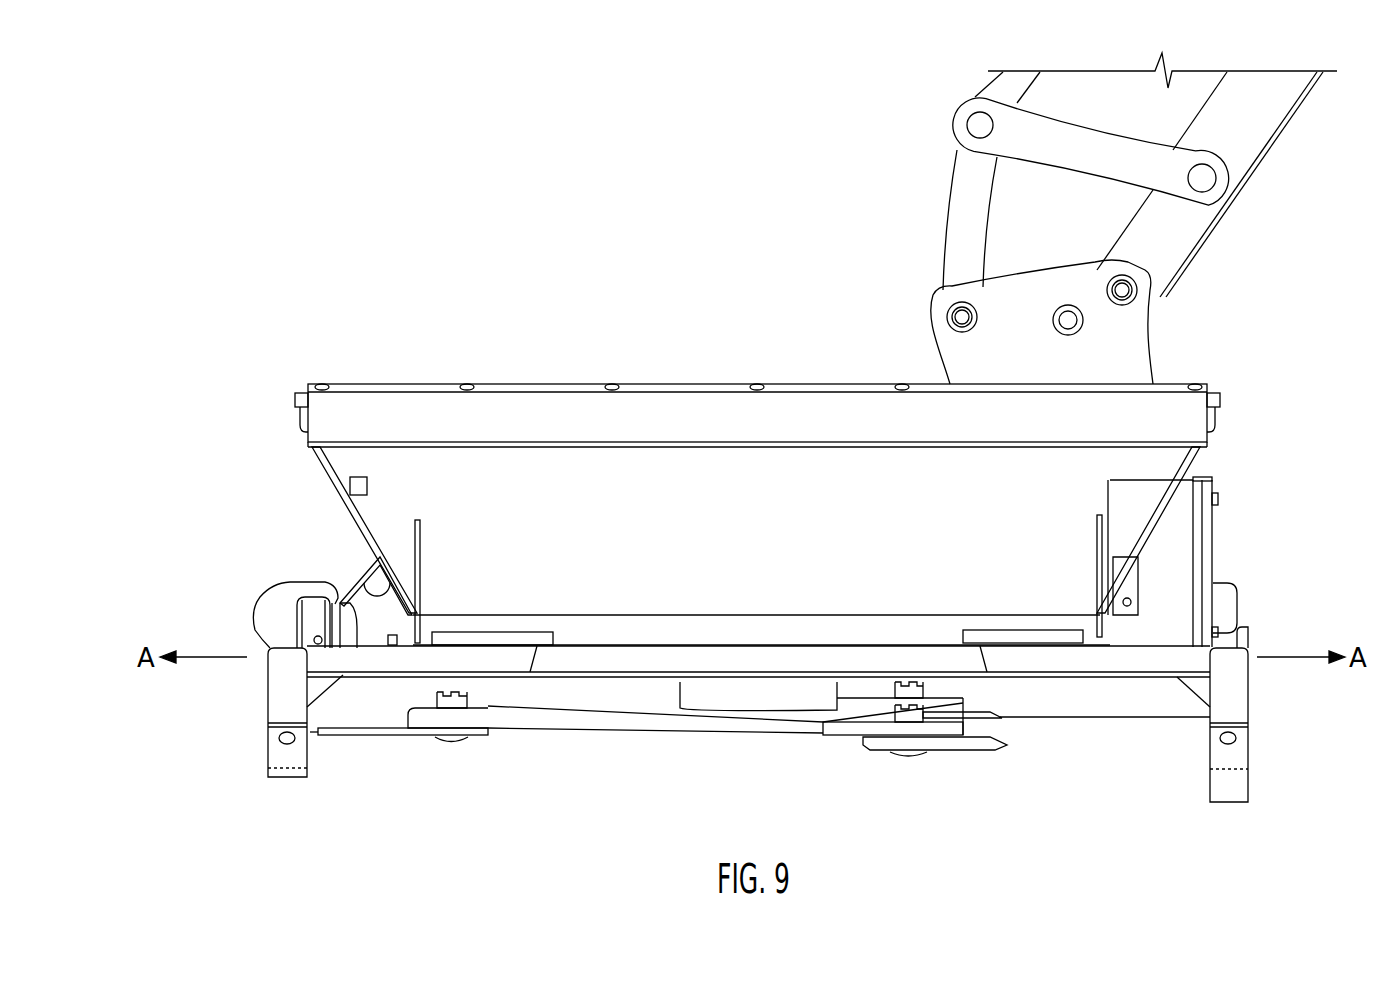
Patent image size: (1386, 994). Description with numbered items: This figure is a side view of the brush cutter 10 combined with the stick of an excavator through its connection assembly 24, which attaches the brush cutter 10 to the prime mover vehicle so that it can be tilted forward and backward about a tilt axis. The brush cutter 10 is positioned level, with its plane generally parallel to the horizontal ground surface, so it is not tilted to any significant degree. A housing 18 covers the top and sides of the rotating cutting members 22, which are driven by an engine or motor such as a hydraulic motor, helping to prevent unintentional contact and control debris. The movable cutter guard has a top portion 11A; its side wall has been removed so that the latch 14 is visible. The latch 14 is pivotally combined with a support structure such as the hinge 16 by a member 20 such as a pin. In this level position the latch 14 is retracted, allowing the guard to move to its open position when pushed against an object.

The brush cutter device 10 is at (571, 277).
The top portion of cutter guard 11A is at (775, 518).
The latch 14 is at (277, 607).
The hinge 16 is at (318, 613).
The housing 18 is at (1177, 672).
The member 20 is at (317, 647).
The cutting member 22 is at (365, 462).
The connection assembly 24 is at (930, 369).